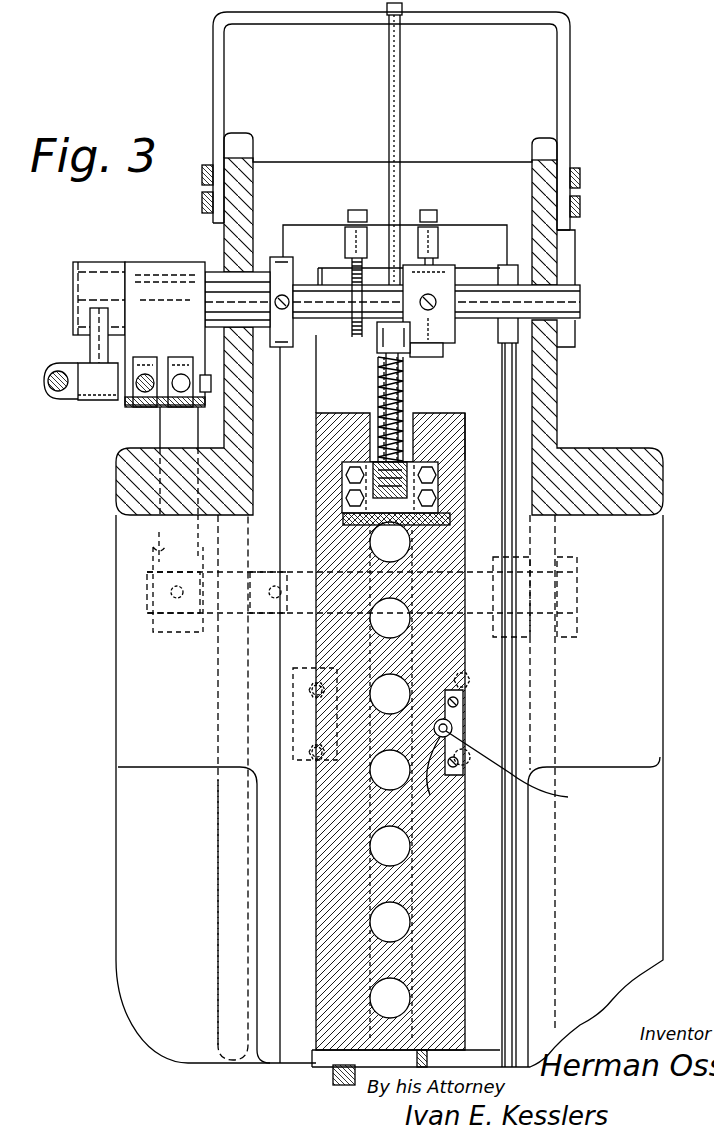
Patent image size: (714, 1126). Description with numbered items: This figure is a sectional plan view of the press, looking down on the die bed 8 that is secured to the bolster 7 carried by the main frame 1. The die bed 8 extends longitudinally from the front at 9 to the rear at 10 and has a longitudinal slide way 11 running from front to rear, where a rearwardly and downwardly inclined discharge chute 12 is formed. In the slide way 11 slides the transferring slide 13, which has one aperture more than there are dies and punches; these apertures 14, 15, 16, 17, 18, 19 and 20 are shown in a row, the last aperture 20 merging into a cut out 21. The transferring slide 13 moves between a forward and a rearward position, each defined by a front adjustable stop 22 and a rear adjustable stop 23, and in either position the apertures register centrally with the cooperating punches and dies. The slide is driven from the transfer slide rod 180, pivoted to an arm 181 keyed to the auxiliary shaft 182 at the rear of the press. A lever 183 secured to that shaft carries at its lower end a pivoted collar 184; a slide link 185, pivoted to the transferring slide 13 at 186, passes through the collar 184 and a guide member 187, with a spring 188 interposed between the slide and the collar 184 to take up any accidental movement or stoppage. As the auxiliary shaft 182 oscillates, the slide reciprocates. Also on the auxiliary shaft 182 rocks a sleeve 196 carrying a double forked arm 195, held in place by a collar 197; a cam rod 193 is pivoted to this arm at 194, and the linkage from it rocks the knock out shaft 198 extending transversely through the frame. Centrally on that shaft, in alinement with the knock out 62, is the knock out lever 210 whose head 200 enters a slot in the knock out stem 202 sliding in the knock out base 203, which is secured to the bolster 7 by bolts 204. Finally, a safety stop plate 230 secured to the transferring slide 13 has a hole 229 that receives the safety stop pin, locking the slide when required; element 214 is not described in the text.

The main frame 1 is at (548, 409).
The bolster 7 is at (389, 701).
The die bed 8 is at (390, 640).
The front of die bed 9 is at (396, 1073).
The rear of die bed 10 is at (395, 245).
The slide way 11 is at (465, 848).
The discharge chute 12 is at (386, 378).
The transferring slide 13 is at (390, 731).
The aperture 14 is at (390, 998).
The aperture 15 is at (390, 922).
The aperture 16 is at (390, 846).
The aperture 17 is at (390, 770).
The aperture 18 is at (390, 694).
The aperture 19 is at (390, 618).
The aperture 20 is at (390, 542).
The cut out 21 is at (413, 457).
The front adjustable stop 22 is at (341, 1085).
The rear adjustable stop 23 is at (355, 210).
The knock out 62 is at (363, 810).
The transfer slide rod 180 is at (53, 398).
The arm 181 is at (90, 347).
The auxiliary shaft 182 is at (73, 284).
The lever 183 is at (440, 290).
The collar 184 is at (378, 345).
The slide link 185 is at (403, 107).
The pivot 186 is at (440, 490).
The guide member 187 is at (485, 17).
The spring 188 is at (402, 394).
The cam rod 193 is at (128, 395).
The pivot 194 is at (212, 386).
The double forked arm 195 is at (165, 334).
The sleeve 196 is at (221, 265).
The collar 197 is at (287, 263).
The knock out shaft 198 is at (147, 592).
The head 200 is at (377, 722).
The knock out stem 202 is at (410, 691).
The knock out base 203 is at (462, 713).
The bolt 204 is at (455, 745).
The knock out lever 210 is at (377, 648).
The pin 214 is at (48, 373).
The aperture 229 is at (456, 774).
The safety stop plate 230 is at (524, 770).